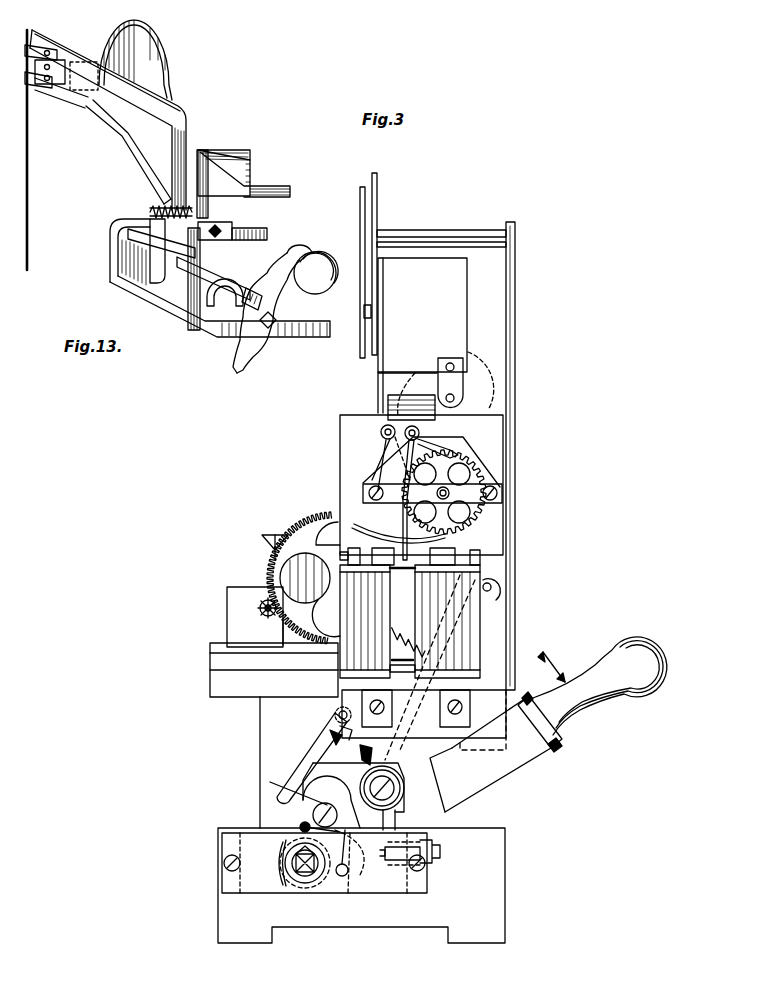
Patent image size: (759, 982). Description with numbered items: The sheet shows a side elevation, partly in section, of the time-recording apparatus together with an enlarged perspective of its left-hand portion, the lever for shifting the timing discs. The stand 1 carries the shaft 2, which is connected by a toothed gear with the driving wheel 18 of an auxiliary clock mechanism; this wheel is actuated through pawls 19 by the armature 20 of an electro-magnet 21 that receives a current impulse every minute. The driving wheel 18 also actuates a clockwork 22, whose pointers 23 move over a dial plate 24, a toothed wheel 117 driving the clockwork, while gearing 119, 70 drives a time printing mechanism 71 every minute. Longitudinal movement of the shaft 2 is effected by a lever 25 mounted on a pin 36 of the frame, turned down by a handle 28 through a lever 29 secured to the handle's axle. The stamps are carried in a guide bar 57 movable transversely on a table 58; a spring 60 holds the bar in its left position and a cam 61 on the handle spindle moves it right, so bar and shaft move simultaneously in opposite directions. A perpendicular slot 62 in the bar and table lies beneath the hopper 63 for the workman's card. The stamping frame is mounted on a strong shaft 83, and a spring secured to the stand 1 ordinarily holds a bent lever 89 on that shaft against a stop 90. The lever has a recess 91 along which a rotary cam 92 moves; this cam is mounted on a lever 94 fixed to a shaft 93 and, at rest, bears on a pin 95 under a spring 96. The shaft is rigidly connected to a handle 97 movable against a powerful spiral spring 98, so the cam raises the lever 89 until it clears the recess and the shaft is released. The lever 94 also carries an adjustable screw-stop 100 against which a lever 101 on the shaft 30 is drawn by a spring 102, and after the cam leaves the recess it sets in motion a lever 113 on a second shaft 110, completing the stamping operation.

In FIG. 13, the stand 1 is at (186, 128).
In FIG. 3, the stand 1 is at (499, 654).
In FIG. 13, the shaft 2 is at (130, 70).
In FIG. 3, the driving wheel 18 is at (472, 512).
In FIG. 3, the pawls 19 is at (383, 438).
In FIG. 3, the armature 20 is at (388, 538).
In FIG. 3, the electro-magnet 21 is at (452, 596).
In FIG. 3, the clockwork 22 is at (422, 335).
In FIG. 3, the pointers 23 is at (358, 253).
In FIG. 3, the dial plate 24 is at (378, 224).
In FIG. 13, the lever 25 is at (130, 150).
In FIG. 13, the handle 28 is at (304, 253).
In FIG. 13, the lever 29 is at (125, 222).
In FIG. 3, the shaft 30 is at (492, 586).
In FIG. 13, the pin 36 is at (50, 48).
In FIG. 13, the guide bar 57 is at (224, 272).
In FIG. 3, the guide bar 57 is at (296, 650).
In FIG. 3, the table 58 is at (252, 668).
In FIG. 13, the spring 60 is at (166, 204).
In FIG. 13, the cam 61 is at (150, 278).
In FIG. 13, the slot 62 is at (222, 250).
In FIG. 13, the hopper 63 is at (232, 152).
In FIG. 3, the hopper 63 is at (275, 535).
In FIG. 3, the gearing 70 is at (265, 600).
In FIG. 3, the time printing mechanism 71 is at (227, 617).
In FIG. 3, the shaft 83 is at (394, 796).
In FIG. 3, the bent lever 89 is at (308, 770).
In FIG. 3, the stop 90 is at (390, 865).
In FIG. 3, the recess 91 is at (320, 800).
In FIG. 3, the rotary cam 92 is at (270, 782).
In FIG. 3, the shaft 93 is at (307, 885).
In FIG. 3, the lever 94 is at (282, 878).
In FIG. 3, the pin 95 is at (300, 826).
In FIG. 3, the spring 96 is at (298, 748).
In FIG. 3, the handle 97 is at (548, 724).
In FIG. 3, the spiral spring 98 is at (346, 880).
In FIG. 3, the screw-stop 100 is at (358, 745).
In FIG. 3, the lever 101 is at (490, 612).
In FIG. 3, the spring 102 is at (412, 650).
In FIG. 3, the shaft 110 is at (336, 713).
In FIG. 3, the lever 113 is at (330, 735).
In FIG. 3, the toothed wheel 117 is at (476, 378).
In FIG. 3, the gearing 119 is at (318, 512).